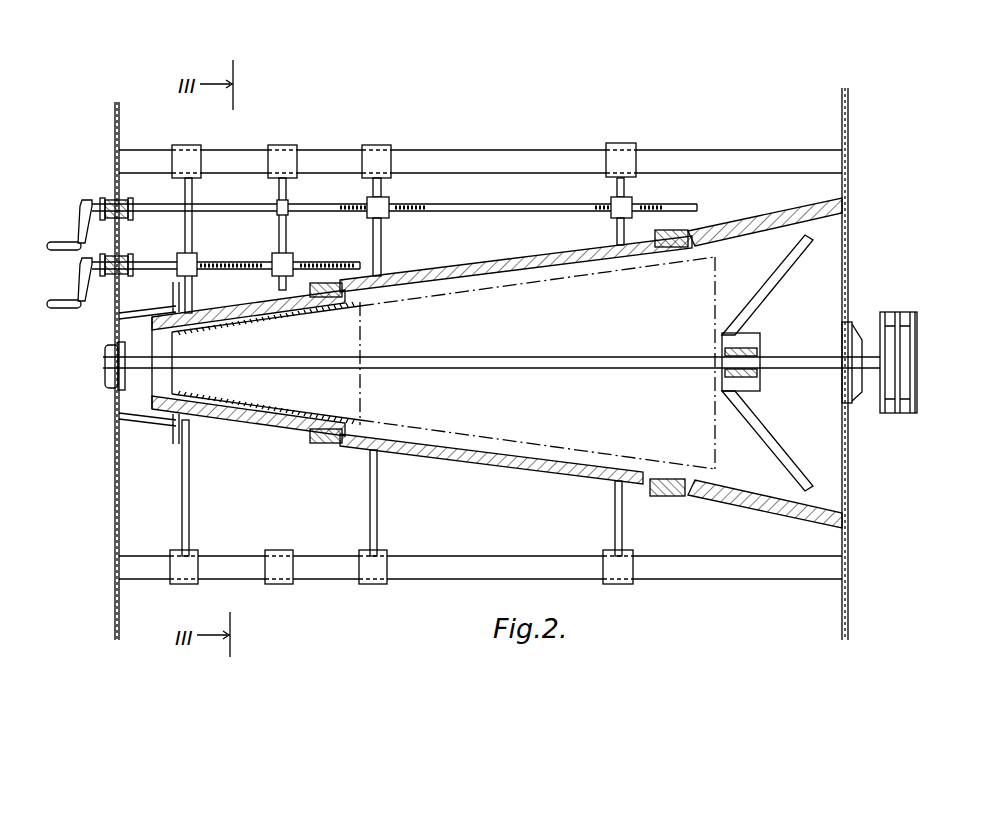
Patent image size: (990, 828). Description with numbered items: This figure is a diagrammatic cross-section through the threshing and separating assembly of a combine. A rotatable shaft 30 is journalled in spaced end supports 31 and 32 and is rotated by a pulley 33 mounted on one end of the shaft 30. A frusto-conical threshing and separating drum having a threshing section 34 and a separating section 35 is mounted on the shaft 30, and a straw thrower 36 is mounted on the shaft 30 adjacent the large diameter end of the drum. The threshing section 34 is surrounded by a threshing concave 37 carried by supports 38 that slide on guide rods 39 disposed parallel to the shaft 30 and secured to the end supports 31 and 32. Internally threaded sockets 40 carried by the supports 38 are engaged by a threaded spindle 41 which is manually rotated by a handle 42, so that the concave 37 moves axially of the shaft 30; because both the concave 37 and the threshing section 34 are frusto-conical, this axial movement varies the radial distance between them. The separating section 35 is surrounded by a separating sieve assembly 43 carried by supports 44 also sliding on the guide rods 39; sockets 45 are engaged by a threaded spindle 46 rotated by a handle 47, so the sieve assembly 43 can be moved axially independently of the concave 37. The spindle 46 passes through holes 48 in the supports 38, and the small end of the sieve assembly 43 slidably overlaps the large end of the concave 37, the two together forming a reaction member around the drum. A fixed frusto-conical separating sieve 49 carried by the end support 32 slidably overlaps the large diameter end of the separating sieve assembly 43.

The rotatable shaft 30 is at (566, 356).
The end support 31 is at (115, 518).
The end support 32 is at (848, 278).
The pulley 33 is at (918, 345).
The threshing section 34 is at (162, 414).
The separating section 35 is at (521, 440).
The straw thrower 36 is at (779, 447).
The threshing concave 37 is at (230, 417).
The supports 38 is at (184, 237).
The guide rods 39 is at (424, 160).
The internally threaded sockets 40 is at (180, 276).
The threaded spindle 41 is at (237, 262).
The handle 42 is at (54, 301).
The separating sieve assembly 43 is at (461, 274).
The supports 44 is at (614, 524).
The sockets 45 is at (609, 213).
The threaded spindle 46 is at (488, 207).
The handle 47 is at (54, 243).
The holes 48 is at (279, 206).
The fixed separating sieve 49 is at (743, 224).